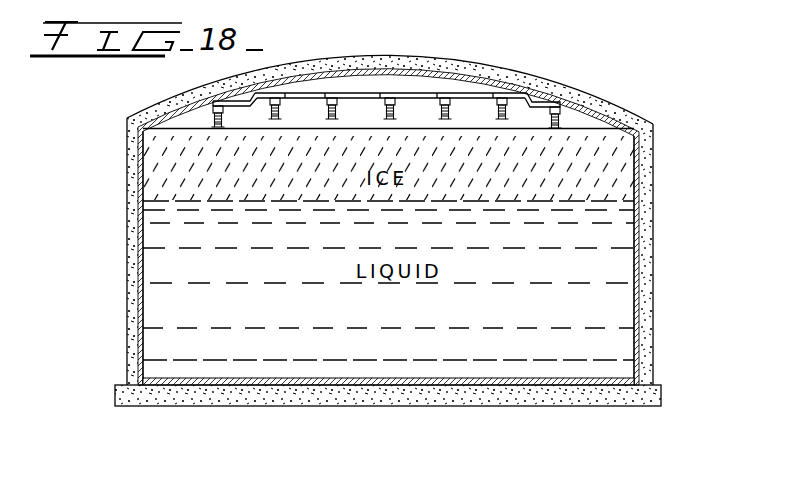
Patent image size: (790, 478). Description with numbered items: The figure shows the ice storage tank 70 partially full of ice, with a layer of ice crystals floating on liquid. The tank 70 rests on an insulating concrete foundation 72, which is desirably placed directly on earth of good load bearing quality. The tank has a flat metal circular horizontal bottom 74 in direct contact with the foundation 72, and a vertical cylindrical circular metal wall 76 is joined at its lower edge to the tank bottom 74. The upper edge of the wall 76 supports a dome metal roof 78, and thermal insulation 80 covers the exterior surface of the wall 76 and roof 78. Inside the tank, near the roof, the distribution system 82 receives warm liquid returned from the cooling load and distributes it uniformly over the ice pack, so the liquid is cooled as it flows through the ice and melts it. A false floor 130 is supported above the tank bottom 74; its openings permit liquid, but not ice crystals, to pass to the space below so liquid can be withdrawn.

The ice storage tank 70 is at (656, 313).
The insulating concrete foundation 72 is at (313, 400).
The tank bottom 74 is at (220, 378).
The wall 76 is at (128, 266).
The dome metal roof 78 is at (527, 83).
The thermal insulation 80 is at (648, 183).
The distribution system 82 is at (418, 86).
The false floor 130 is at (527, 358).